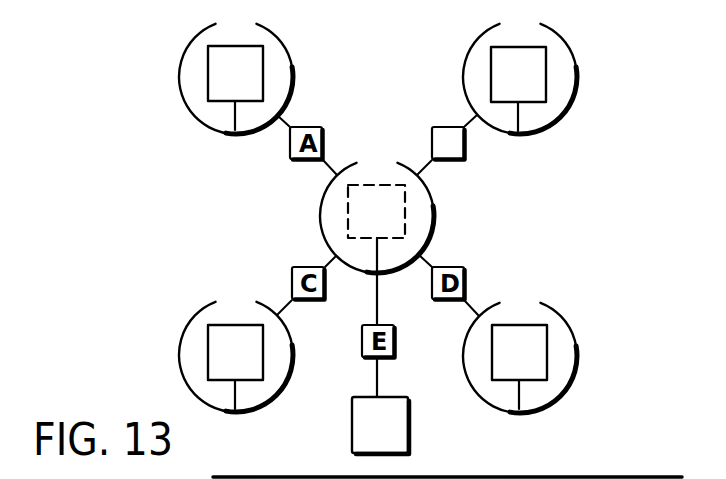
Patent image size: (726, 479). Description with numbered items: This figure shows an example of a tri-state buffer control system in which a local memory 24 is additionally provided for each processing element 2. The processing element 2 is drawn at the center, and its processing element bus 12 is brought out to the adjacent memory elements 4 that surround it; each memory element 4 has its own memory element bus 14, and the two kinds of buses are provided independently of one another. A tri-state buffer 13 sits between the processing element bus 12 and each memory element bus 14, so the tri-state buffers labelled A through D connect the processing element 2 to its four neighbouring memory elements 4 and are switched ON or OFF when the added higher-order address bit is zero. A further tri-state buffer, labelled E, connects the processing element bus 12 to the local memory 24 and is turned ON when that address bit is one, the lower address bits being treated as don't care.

The processing element 2 is at (378, 182).
The memory element 4 is at (547, 82).
The processing element bus 12 is at (435, 213).
The tri-state buffer 13 is at (464, 145).
The memory element bus 14 is at (565, 40).
The local memory 24 is at (409, 433).